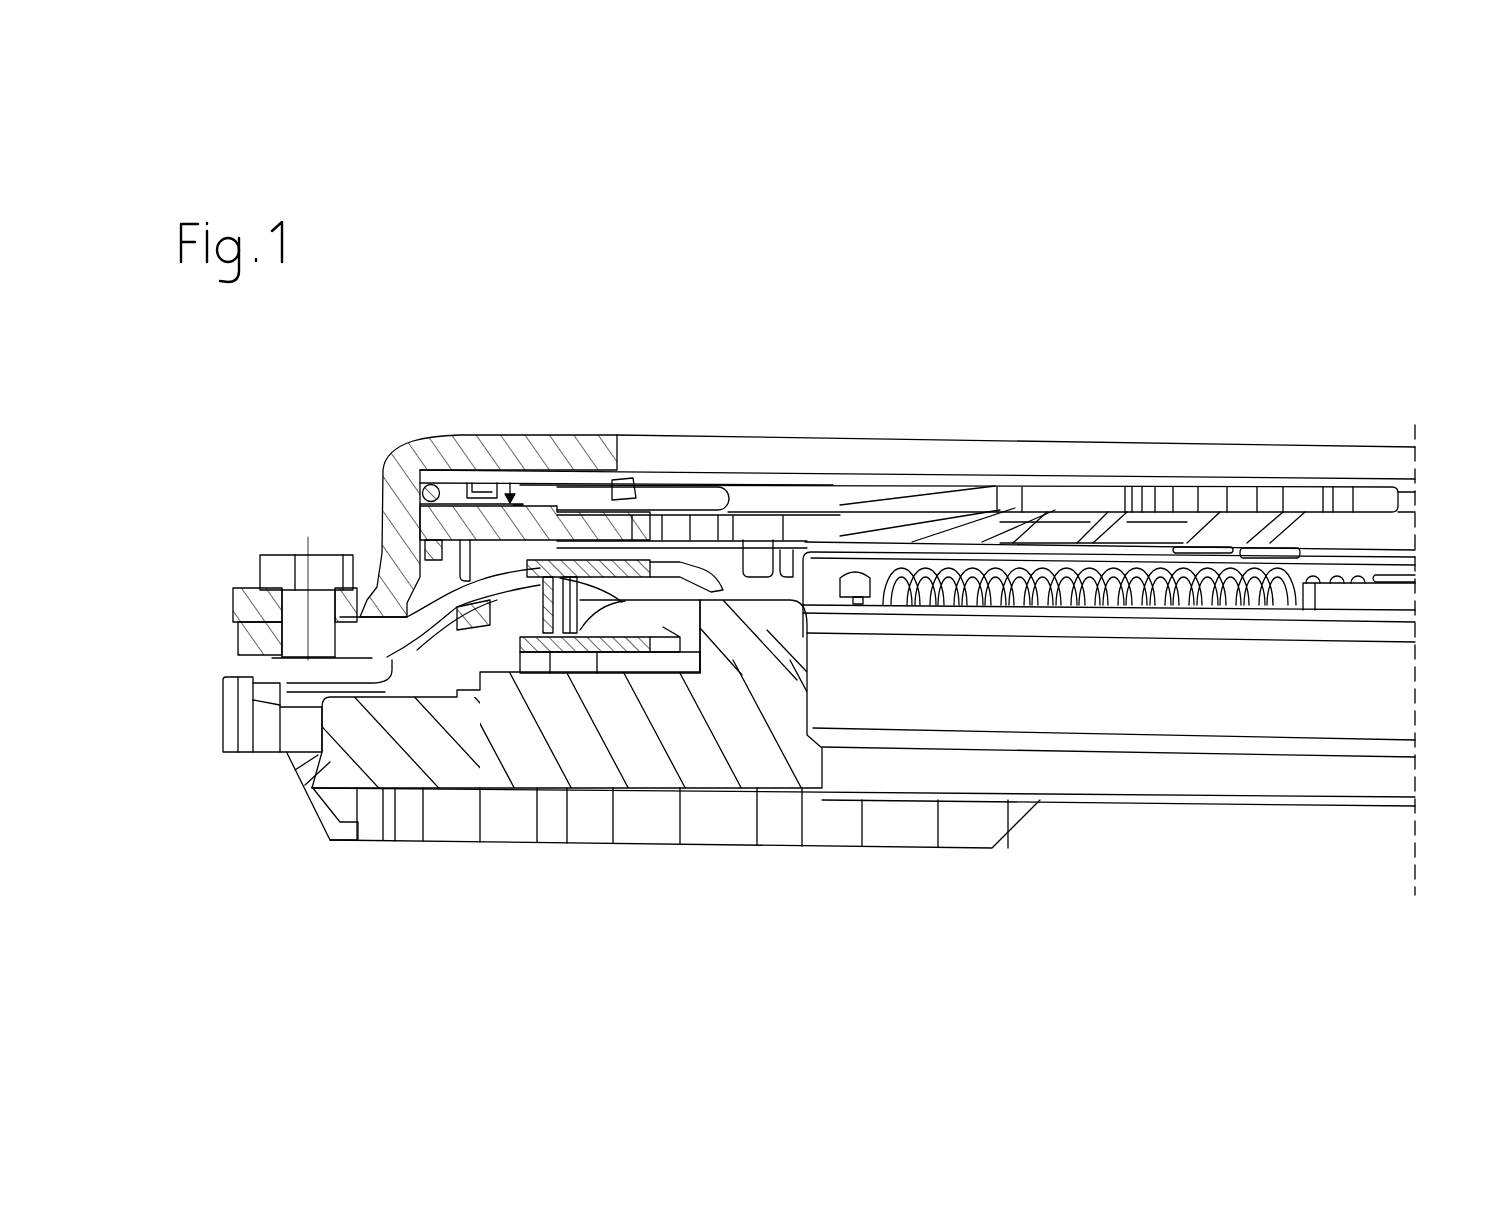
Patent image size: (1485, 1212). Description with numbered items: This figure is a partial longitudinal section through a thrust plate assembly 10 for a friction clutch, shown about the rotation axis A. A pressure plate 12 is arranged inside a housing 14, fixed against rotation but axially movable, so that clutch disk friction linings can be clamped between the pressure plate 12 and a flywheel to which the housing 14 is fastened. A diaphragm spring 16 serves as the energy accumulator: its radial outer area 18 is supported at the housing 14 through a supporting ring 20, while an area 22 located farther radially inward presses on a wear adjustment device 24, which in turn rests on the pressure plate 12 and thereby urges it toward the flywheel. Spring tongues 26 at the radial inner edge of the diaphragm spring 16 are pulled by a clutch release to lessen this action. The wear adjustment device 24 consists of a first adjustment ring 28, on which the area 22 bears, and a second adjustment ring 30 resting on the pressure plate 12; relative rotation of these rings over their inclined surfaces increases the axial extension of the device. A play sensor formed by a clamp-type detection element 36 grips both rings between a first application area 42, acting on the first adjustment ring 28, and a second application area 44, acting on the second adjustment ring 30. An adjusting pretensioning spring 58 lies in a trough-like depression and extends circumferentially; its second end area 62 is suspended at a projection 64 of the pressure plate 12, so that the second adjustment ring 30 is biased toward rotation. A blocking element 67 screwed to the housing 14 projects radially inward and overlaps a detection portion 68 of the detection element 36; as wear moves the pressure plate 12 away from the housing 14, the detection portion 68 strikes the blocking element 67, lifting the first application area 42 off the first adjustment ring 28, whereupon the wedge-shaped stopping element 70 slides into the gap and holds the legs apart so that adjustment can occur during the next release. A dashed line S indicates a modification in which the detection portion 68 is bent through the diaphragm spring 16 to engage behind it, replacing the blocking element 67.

The thrust plate assembly 10 is at (1170, 301).
The pressure plate 12 is at (1390, 782).
The housing 14 is at (1270, 445).
The diaphragm spring 16 is at (548, 525).
The radial outer area 18 is at (430, 526).
The supporting ring 20 is at (425, 446).
The area 22 is at (590, 565).
The wear adjustment device 24 is at (503, 568).
The spring tongues 26 is at (963, 500).
The first adjustment ring 28 is at (600, 560).
The second adjustment ring 30 is at (535, 608).
The detection element 36 is at (668, 625).
The first application area 42 is at (500, 598).
The second application area 44 is at (557, 625).
The adjusting pretensioning spring 58 is at (1077, 570).
The second end area 62 is at (877, 575).
The projection 64 is at (840, 572).
The blocking element 67 is at (390, 640).
The detection portion 68 is at (535, 605).
The stopping element 70 is at (702, 602).
The dashed line S is at (531, 448).
The axis A is at (1415, 880).